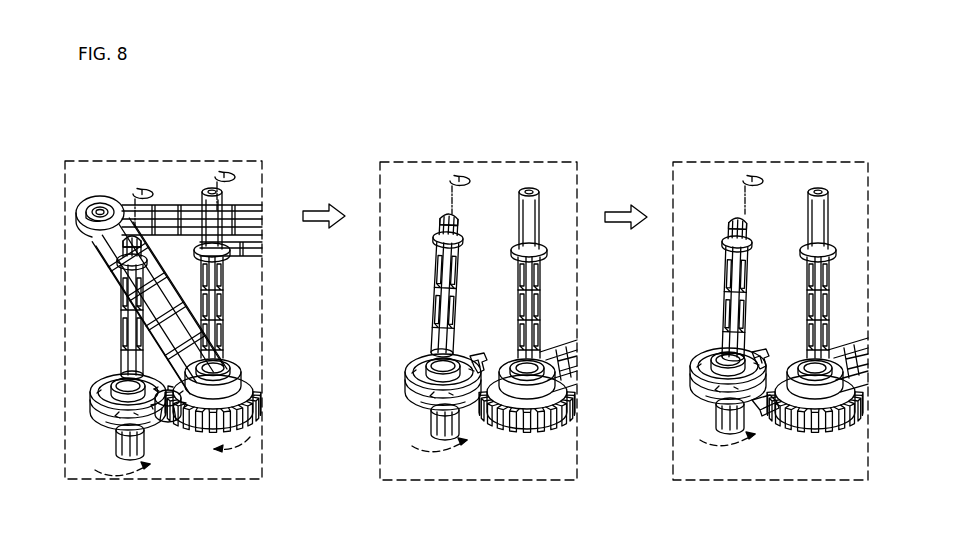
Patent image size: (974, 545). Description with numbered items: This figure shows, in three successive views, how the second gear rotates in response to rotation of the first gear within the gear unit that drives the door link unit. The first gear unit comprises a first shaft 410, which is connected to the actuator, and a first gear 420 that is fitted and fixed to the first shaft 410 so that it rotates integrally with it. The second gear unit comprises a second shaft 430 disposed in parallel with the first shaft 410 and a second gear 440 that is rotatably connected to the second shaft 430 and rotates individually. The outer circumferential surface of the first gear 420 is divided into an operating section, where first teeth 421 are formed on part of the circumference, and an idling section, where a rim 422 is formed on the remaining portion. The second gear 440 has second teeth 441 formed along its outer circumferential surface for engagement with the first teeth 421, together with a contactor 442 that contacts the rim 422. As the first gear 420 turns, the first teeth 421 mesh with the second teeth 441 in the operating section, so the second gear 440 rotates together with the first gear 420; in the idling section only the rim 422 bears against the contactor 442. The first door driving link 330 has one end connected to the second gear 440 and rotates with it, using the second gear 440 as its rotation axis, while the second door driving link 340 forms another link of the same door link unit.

The second door driving link 340 is at (176, 214).
The first door driving link 330 is at (100, 273).
The first shaft 410 is at (125, 330).
The second shaft 430 is at (225, 337).
The rim 422 is at (97, 388).
The first gear 420 is at (105, 432).
The first teeth 421 is at (165, 437).
The second gear 440 is at (248, 388).
The second teeth 441 is at (238, 458).
The contactor 442 is at (197, 443).